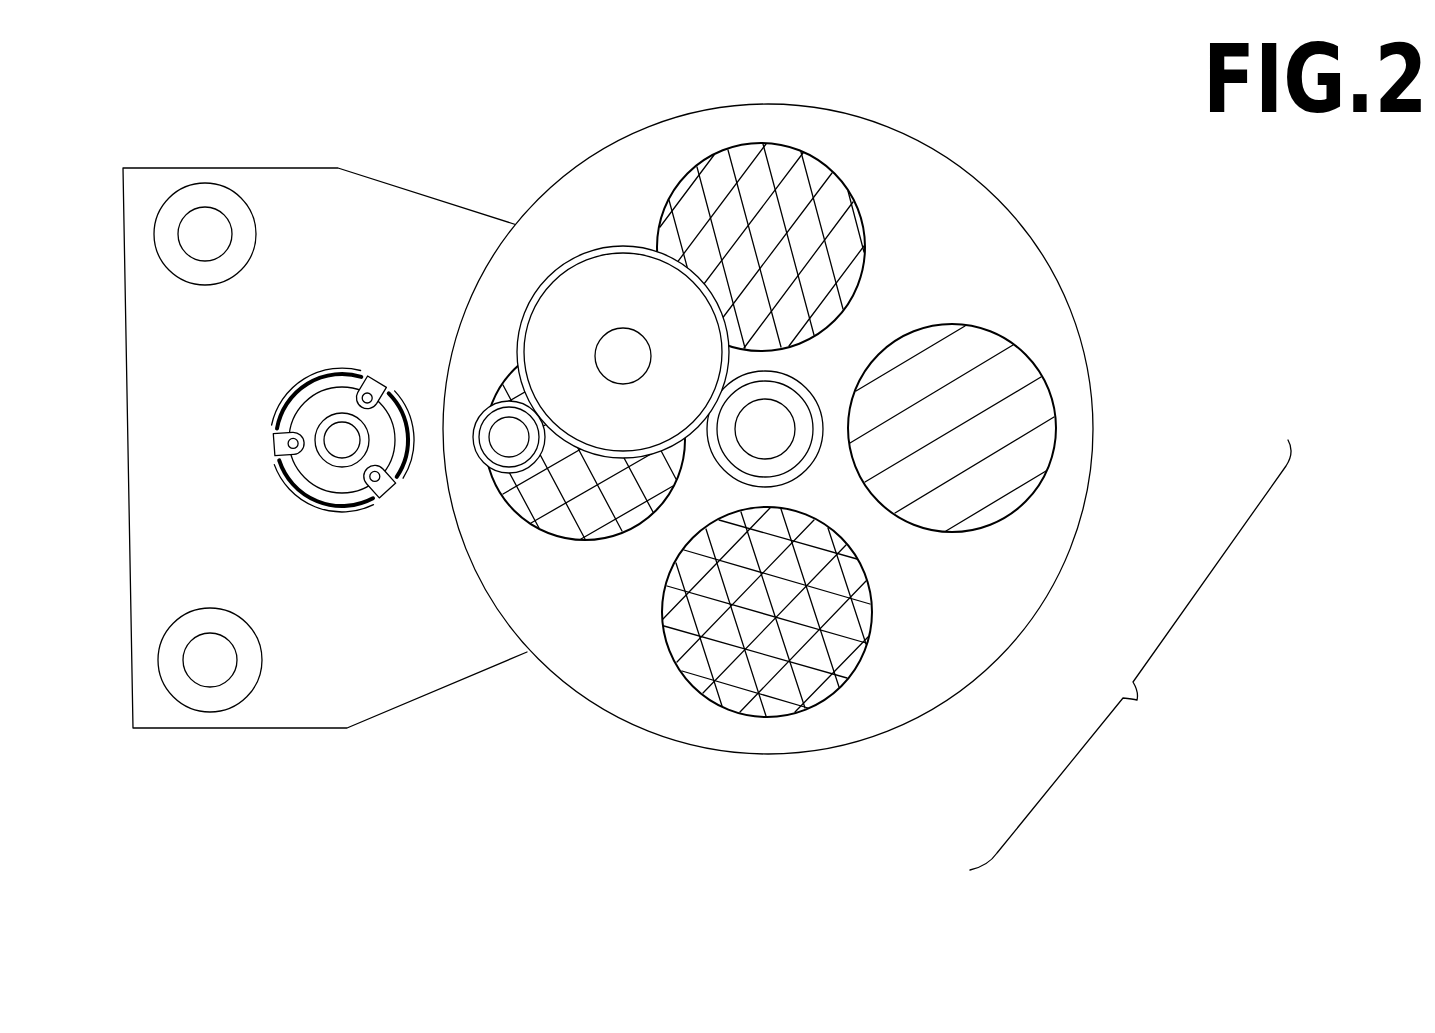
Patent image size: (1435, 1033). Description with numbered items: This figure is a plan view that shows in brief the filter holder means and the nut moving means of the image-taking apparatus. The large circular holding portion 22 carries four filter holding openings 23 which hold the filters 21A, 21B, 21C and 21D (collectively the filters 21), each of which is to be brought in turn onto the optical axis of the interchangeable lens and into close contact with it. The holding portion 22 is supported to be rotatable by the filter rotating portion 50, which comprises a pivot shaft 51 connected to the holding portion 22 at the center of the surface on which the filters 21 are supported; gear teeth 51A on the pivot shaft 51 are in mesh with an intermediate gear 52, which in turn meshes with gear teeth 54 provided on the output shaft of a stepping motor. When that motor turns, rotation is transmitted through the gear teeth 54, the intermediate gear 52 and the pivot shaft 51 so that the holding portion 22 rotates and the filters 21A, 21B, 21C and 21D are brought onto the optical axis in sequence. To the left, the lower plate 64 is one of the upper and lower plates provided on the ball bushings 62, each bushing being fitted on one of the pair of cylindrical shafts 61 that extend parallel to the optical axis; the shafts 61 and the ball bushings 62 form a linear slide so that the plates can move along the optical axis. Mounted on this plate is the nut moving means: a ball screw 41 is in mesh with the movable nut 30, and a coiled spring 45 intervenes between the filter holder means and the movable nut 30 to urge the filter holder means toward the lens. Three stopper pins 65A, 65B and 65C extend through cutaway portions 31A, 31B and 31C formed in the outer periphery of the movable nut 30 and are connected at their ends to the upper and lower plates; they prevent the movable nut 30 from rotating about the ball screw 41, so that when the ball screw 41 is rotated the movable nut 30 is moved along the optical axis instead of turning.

The filter 21 is at (1130, 655).
The filter 21A is at (1003, 510).
The filter 21B is at (847, 667).
The filter 21C is at (605, 528).
The filter 21D is at (843, 258).
The holding portion 22 is at (990, 237).
The filter holding opening 23 is at (838, 166).
The movable nut 30 is at (337, 480).
The cutaway portion 31A is at (393, 497).
The cutaway portion 31B is at (268, 450).
The cutaway portion 31C is at (385, 375).
The ball screw 41 is at (328, 432).
The coiled spring 45 is at (302, 380).
The filter rotating portion 50 is at (622, 243).
The pivot shaft 51 is at (765, 418).
The gear teeth 51A is at (822, 407).
The intermediate gear 52 is at (578, 293).
The gear teeth 54 is at (480, 452).
The cylindrical shaft 61 is at (208, 220).
The ball bushing 62 is at (183, 197).
The lower plate 64 is at (375, 700).
The stopper pin 65A is at (374, 487).
The stopper pin 65B is at (272, 432).
The stopper pin 65C is at (366, 392).